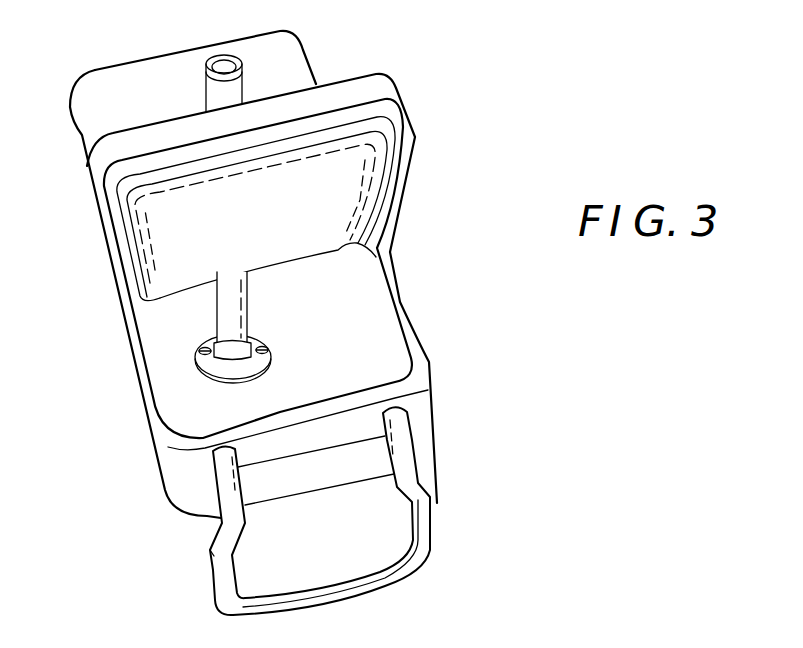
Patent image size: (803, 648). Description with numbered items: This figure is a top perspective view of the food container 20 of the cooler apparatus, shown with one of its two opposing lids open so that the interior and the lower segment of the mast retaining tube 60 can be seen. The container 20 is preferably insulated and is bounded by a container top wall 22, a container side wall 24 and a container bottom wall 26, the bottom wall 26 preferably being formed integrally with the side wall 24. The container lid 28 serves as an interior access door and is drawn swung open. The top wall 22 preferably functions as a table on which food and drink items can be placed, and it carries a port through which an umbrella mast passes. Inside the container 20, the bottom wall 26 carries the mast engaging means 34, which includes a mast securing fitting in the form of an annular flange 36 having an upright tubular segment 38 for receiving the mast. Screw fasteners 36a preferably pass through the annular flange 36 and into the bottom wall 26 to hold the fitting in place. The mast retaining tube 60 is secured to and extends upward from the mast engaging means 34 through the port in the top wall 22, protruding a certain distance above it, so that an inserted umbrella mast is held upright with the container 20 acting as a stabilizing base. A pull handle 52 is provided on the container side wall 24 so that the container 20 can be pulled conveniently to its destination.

The food container 20 is at (483, 170).
The container top wall 22 is at (152, 80).
The container side wall 24 is at (424, 334).
The container bottom wall 26 is at (211, 428).
The container lid 28 is at (113, 240).
The mast engaging means 34 is at (262, 338).
The annular flange 36 is at (250, 364).
The screw fasteners 36a is at (199, 352).
The upright tubular segment 38 is at (197, 387).
The pull handle 52 is at (431, 517).
The mast retaining tube 60 is at (242, 86).